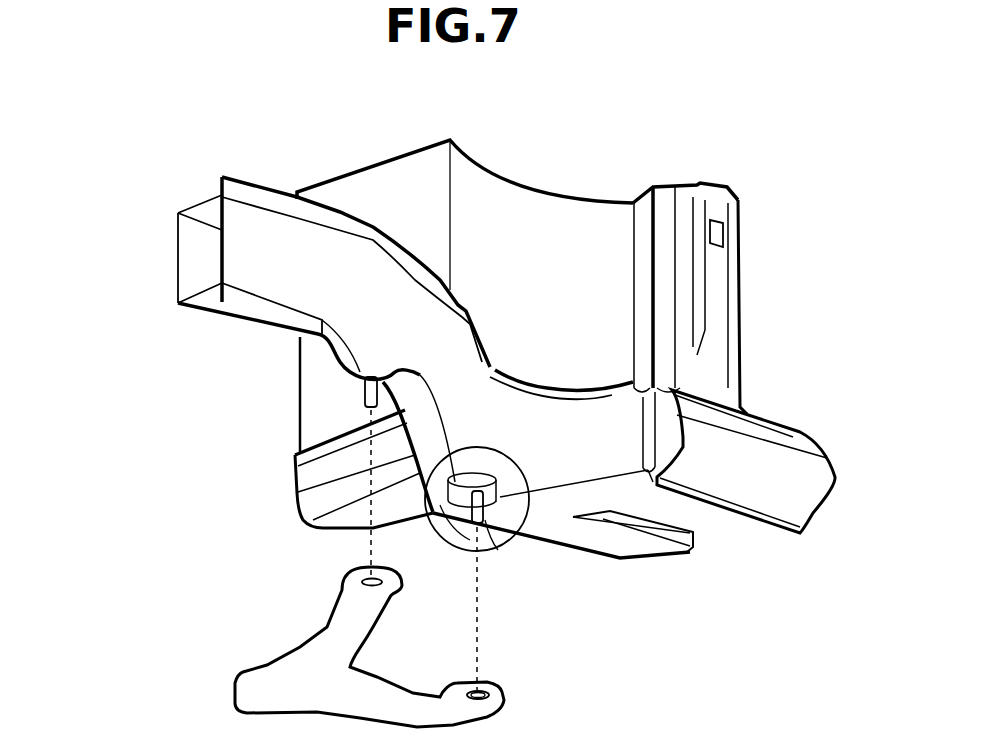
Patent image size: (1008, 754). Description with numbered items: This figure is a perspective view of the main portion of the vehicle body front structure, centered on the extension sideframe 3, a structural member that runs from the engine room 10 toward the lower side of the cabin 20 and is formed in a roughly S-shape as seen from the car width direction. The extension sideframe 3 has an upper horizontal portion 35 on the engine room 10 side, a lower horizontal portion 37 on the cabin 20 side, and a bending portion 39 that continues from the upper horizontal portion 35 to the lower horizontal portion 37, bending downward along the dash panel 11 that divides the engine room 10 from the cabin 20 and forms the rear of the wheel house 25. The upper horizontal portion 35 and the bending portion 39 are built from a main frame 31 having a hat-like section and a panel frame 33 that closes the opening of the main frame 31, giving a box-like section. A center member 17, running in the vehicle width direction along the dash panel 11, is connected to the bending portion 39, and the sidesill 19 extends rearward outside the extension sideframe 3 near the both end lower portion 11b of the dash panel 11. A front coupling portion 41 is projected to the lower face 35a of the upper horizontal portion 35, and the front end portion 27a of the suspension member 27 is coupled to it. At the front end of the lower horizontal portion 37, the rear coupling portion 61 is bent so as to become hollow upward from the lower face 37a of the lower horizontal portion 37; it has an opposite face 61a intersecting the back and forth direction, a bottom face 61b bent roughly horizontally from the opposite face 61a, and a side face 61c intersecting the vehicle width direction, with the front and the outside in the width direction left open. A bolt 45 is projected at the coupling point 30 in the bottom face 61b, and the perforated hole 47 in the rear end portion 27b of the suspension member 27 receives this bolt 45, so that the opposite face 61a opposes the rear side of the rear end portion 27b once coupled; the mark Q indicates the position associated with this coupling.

The extension sideframe 3 is at (187, 205).
The engine room 10 is at (322, 123).
The dash panel 11 is at (415, 168).
The both end lower portion of dash panel 11b is at (593, 368).
The center member 17 is at (303, 480).
The sidesill 19 is at (790, 448).
The cabin 20 is at (807, 277).
The wheel house 25 is at (547, 259).
The suspension member 27 is at (240, 673).
The front end portion of suspension member 27a is at (340, 580).
The rear end portion of suspension member 27b is at (503, 697).
The coupling point 30 is at (486, 496).
The main frame 31 is at (178, 255).
The panel frame 33 is at (263, 227).
The upper horizontal portion 35 is at (220, 318).
The lower face of upper horizontal portion 35a is at (292, 332).
The lower horizontal portion 37 is at (510, 535).
The lower face of lower horizontal portion 37a is at (533, 528).
The bending portion 39 is at (317, 493).
The front coupling portion 41 is at (357, 365).
The bolt 45 is at (458, 550).
The perforated hole 47 is at (467, 687).
The rear coupling portion 61 is at (498, 482).
The opposite face 61a is at (560, 543).
The bottom face 61b is at (480, 470).
The side face 61c is at (452, 437).
The point Q is at (495, 558).